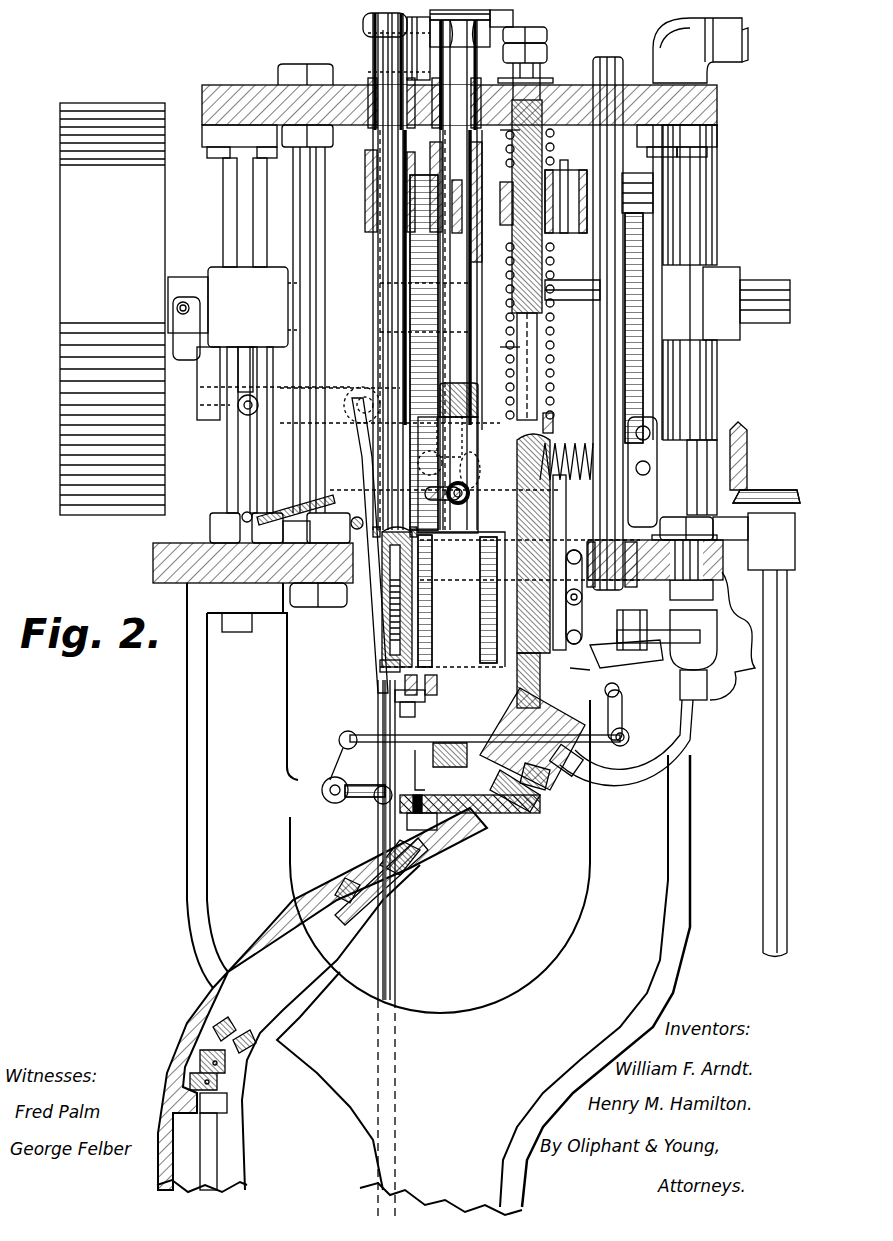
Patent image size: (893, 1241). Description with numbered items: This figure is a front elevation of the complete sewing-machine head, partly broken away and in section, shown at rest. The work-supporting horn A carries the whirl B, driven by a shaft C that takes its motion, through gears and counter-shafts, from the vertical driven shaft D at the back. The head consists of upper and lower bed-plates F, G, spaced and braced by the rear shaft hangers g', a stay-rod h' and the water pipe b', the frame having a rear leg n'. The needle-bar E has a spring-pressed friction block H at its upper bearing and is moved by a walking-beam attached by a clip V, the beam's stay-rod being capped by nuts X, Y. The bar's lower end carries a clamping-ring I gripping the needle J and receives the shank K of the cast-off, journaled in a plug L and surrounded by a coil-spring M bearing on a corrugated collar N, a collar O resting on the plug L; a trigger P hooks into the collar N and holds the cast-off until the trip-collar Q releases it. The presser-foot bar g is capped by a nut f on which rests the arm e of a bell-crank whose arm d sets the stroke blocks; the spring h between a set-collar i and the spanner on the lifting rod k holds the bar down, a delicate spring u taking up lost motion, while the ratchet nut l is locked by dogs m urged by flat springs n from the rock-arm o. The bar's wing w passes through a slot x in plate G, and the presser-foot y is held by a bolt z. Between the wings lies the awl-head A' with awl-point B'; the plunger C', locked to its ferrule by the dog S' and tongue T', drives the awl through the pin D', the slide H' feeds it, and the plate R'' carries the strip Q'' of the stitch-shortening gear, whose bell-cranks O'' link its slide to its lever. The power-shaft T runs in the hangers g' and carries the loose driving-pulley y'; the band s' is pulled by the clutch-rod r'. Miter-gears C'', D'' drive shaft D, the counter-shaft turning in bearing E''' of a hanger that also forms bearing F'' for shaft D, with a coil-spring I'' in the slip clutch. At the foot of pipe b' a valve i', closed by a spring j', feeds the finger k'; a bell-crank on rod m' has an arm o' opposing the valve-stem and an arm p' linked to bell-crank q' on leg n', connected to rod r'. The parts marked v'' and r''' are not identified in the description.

The driving-pulley y' is at (112, 309).
The upper bed-plate F is at (459, 109).
The rear shaft hangers g' is at (466, 320).
The stay-rod h' is at (319, 330).
The power-shaft T is at (234, 329).
The lower block v'' is at (273, 383).
The trip-collar Q is at (340, 394).
The lower bed-plate G is at (190, 537).
The rear leg of the frame n' is at (423, 899).
The work-supporting horn A is at (322, 999).
The whirl drive shaft C is at (309, 1014).
The metallic band s' is at (405, 271).
The bell-crank arm d is at (372, 45).
The spring pressed friction block H is at (358, 93).
The clip V is at (367, 200).
The needle-bar E is at (409, 352).
The spring-pressed dog S' is at (444, 275).
The clutch-rod r' is at (420, 681).
The nut Y is at (460, 28).
The nut X is at (363, 22).
The bell-crank arm e is at (513, 16).
The nut f is at (552, 35).
The plunger C' is at (511, 206).
The tongue T' is at (558, 350).
The presser-foot bar g is at (528, 272).
The delicate spring u is at (506, 130).
The spring h is at (500, 349).
The ratchet faced nut l is at (500, 195).
The dogs m is at (566, 189).
The flat springs n is at (637, 181).
The rock-arm o is at (695, 282).
The pipe b' is at (718, 293).
The bell-crank q' is at (550, 508).
The lifting rod k is at (613, 316).
The trigger P is at (368, 608).
The awl-head A' is at (460, 545).
The corrugated collar N is at (380, 640).
The coil-spring M is at (412, 615).
The slide H' is at (441, 601).
The plate R'' is at (483, 587).
The bearing F'' is at (449, 473).
The pin D' is at (459, 471).
The set-collar i is at (554, 416).
The coil-spring I'' is at (548, 564).
The whirl B is at (509, 651).
The strip Q'' is at (573, 562).
The slot x is at (573, 550).
The bolt z is at (574, 662).
The miter-gear C'' is at (755, 456).
The miter-gear D'' is at (766, 482).
The bearing E''' is at (691, 556).
The valve i' is at (712, 636).
The bell-cranks O'' is at (645, 630).
The spring j' is at (632, 628).
The pivot r''' is at (593, 604).
The bell-crank arm o' is at (626, 654).
The fulcrum rod m' is at (629, 711).
The lower bell-crank arm p' is at (494, 734).
The wing w is at (510, 727).
The presser-foot y is at (471, 743).
The finger k' is at (511, 771).
The awl-point B' is at (433, 770).
The collar O is at (370, 662).
The clamping-ring I is at (376, 683).
The plug L is at (437, 683).
The shank of cast-off K is at (395, 698).
The needle J is at (400, 712).
The vertical driven shaft D is at (754, 763).